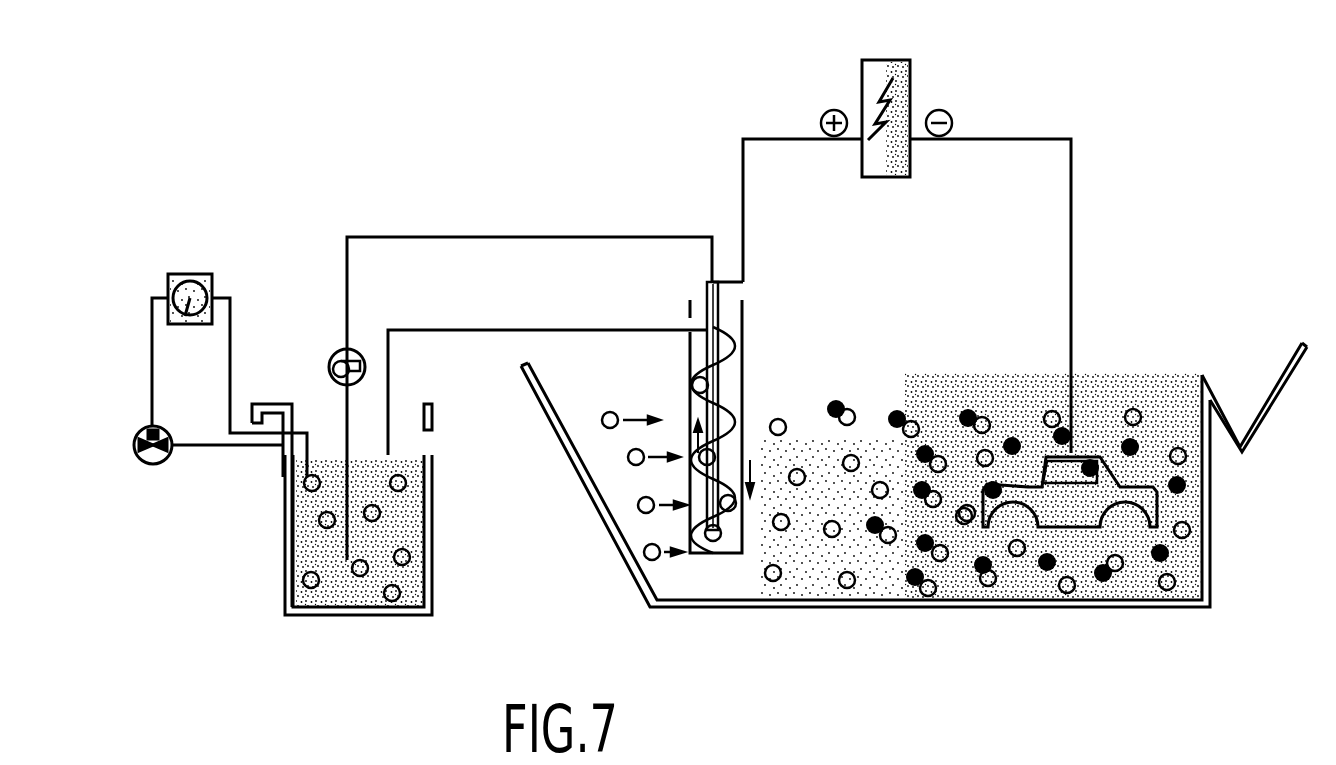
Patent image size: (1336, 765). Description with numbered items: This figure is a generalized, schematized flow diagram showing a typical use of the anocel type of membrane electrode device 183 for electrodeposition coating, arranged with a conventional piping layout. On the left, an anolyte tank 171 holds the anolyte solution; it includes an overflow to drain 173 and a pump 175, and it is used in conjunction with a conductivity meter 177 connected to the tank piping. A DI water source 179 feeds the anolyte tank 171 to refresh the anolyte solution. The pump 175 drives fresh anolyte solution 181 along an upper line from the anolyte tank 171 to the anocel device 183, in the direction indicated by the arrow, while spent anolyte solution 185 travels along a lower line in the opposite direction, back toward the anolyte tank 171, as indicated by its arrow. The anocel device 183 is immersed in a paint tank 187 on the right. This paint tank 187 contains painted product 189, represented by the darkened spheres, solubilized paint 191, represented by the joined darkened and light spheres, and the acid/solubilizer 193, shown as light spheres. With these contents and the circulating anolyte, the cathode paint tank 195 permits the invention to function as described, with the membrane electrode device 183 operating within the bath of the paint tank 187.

The anolyte tank 171 is at (345, 611).
The overflow to drain 173 is at (428, 435).
The pump 175 is at (330, 358).
The conductivity meter 177 is at (190, 272).
The DI water source 179 is at (133, 445).
The fresh anolyte solution 181 is at (680, 225).
The anocel type of device 183 is at (725, 395).
The spent anolyte solution 185 is at (678, 317).
The paint tank 187 is at (727, 607).
The painted product 189 is at (1047, 571).
The solubilized paint 191 is at (917, 586).
The acid/solubilizer 193 is at (1190, 530).
The cathode paint tank 195 is at (1153, 312).